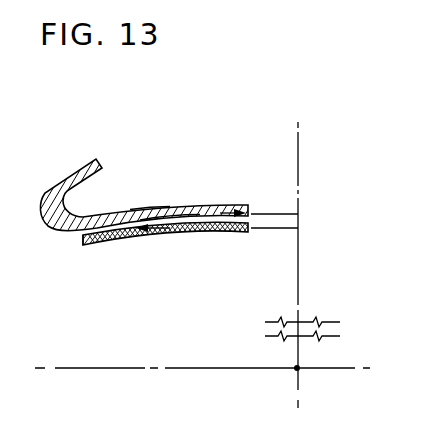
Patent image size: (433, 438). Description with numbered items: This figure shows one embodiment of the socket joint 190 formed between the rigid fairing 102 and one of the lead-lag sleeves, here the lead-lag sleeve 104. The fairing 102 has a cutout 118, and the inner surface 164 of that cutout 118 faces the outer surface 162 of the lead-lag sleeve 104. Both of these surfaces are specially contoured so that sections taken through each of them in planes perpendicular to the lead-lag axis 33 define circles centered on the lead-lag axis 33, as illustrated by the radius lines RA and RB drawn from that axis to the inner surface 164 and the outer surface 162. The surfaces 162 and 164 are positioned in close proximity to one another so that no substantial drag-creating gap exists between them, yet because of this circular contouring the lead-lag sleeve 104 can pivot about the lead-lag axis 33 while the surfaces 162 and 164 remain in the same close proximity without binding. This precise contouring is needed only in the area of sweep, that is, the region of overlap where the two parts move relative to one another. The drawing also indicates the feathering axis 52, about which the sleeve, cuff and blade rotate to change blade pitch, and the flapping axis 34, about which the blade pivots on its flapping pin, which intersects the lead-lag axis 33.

The fairing 102 is at (79, 158).
The cutout 118 is at (98, 225).
The socket joint 190 is at (150, 200).
The inner surface 164 is at (166, 216).
The lead-lag sleeve 104 is at (195, 231).
The outer surface 162 is at (108, 237).
The radius line RA is at (272, 211).
The radius line RB is at (276, 233).
The lead-lag axis 33 is at (298, 264).
The feathering axis 52 is at (135, 332).
The flapping axis 34 is at (297, 370).